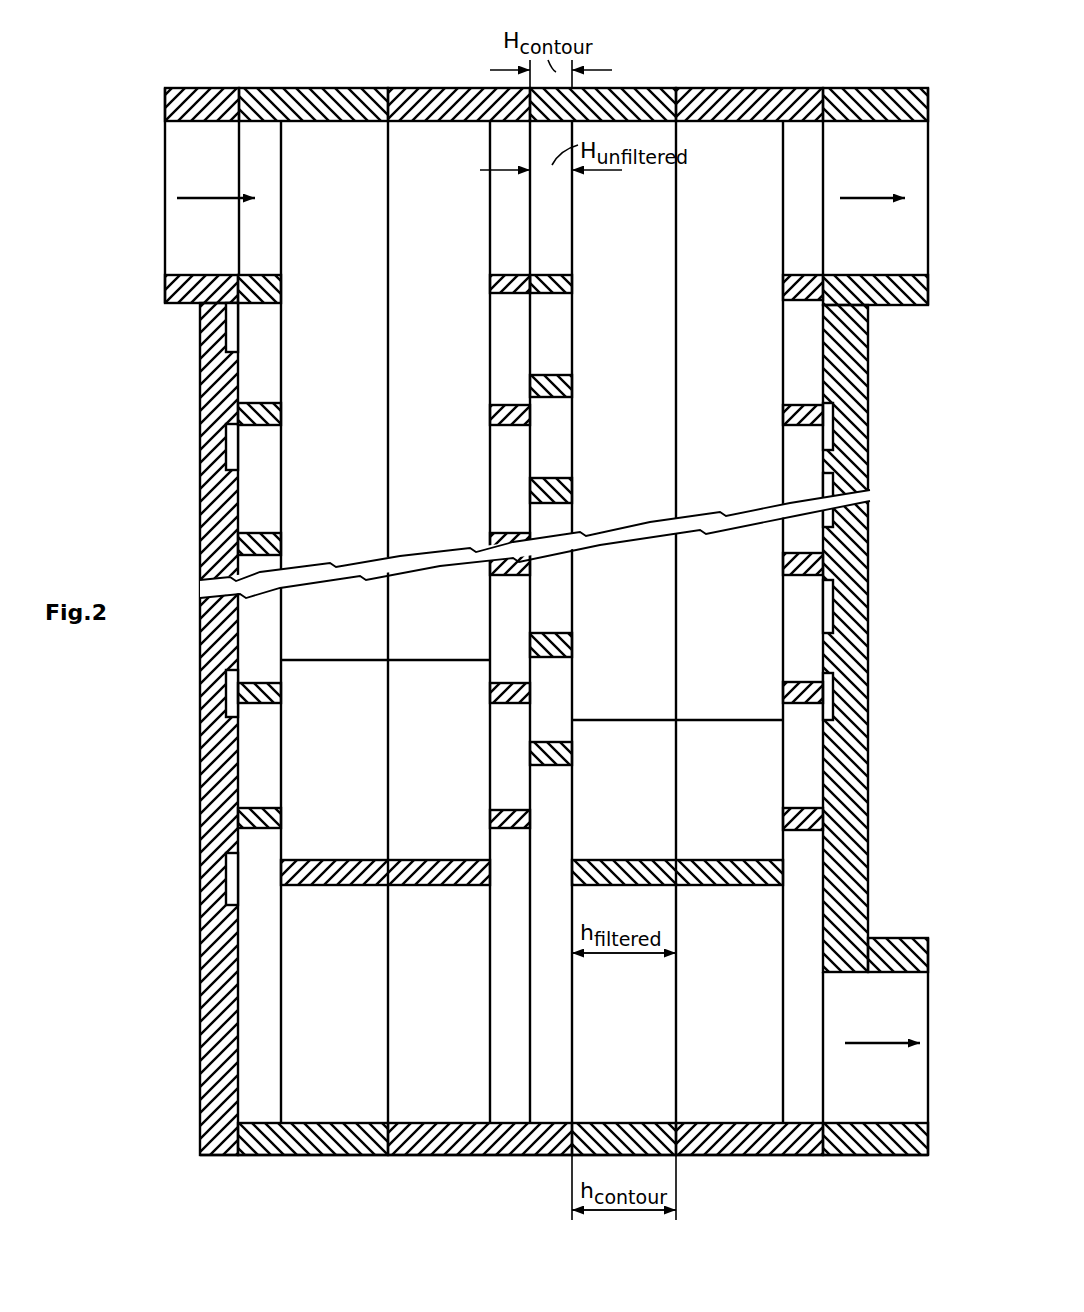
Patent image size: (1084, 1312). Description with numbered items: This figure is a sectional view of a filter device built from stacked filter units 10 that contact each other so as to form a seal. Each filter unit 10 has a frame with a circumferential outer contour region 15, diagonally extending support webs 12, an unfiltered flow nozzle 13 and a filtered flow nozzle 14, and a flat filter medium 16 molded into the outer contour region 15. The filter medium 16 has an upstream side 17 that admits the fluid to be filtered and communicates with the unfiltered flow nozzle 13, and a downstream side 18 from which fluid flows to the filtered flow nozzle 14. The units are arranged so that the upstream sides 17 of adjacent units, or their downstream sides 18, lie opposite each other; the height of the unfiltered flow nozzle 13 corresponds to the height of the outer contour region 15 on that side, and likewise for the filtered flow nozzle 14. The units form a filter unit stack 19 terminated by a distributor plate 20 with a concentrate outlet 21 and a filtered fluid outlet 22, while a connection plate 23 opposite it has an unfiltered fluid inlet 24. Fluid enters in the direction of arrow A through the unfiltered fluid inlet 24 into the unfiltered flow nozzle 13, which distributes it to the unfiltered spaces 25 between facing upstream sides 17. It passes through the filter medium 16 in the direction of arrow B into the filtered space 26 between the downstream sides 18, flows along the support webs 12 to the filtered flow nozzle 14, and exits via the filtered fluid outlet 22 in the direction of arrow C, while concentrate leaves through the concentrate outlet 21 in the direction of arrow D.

The filter unit 10 is at (298, 82).
The support webs 12 is at (240, 408).
The unfiltered flow nozzle 13 is at (531, 622).
The filtered flow nozzle 14 is at (340, 870).
The outer contour region 15 is at (340, 105).
The filter medium 16 is at (283, 378).
The upstream side 17 is at (285, 305).
The downstream side 18 is at (278, 392).
The filter unit stack 19 is at (236, 1164).
The distributor plate 20 is at (832, 430).
The concentrate outlet 21 is at (862, 130).
The filtered fluid outlet 22 is at (905, 972).
The connection plate 23 is at (228, 320).
The unfiltered fluid inlet 24 is at (203, 241).
The unfiltered space 25 is at (362, 662).
The filtered space 26 is at (529, 527).
The arrow A is at (207, 196).
The arrow B is at (262, 358).
The arrow C is at (872, 1042).
The arrow D is at (862, 196).